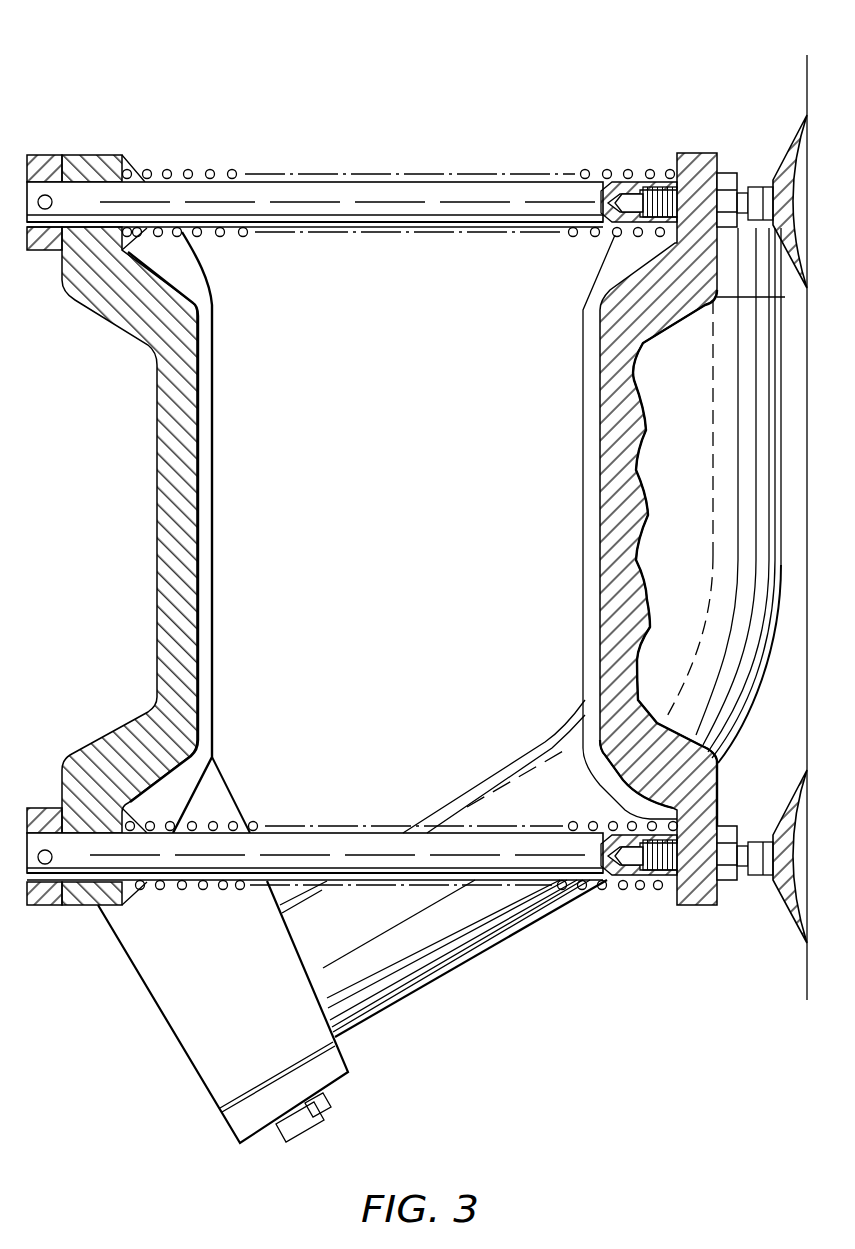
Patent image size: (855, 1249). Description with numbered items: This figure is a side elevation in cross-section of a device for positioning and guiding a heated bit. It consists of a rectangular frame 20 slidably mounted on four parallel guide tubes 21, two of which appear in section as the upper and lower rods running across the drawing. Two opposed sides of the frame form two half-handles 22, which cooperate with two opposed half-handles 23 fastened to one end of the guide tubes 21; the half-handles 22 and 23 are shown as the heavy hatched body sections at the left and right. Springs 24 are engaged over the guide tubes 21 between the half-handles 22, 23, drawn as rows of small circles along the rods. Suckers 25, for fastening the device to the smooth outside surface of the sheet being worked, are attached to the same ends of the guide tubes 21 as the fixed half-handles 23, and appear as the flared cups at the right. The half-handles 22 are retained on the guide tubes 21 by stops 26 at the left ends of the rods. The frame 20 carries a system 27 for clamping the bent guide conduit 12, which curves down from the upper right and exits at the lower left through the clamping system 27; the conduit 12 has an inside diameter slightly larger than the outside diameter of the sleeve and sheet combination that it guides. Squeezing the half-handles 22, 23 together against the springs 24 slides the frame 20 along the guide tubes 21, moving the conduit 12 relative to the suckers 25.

The bent guide conduit 12 is at (762, 670).
The rectangular frame 20 is at (110, 160).
The guide tubes 21 is at (223, 185).
The half-handles 22 is at (165, 618).
The half-handles 23 is at (610, 643).
The springs 24 is at (583, 168).
The suckers 25 is at (780, 157).
The stops 26 is at (53, 160).
The clamping system 27 is at (337, 1053).